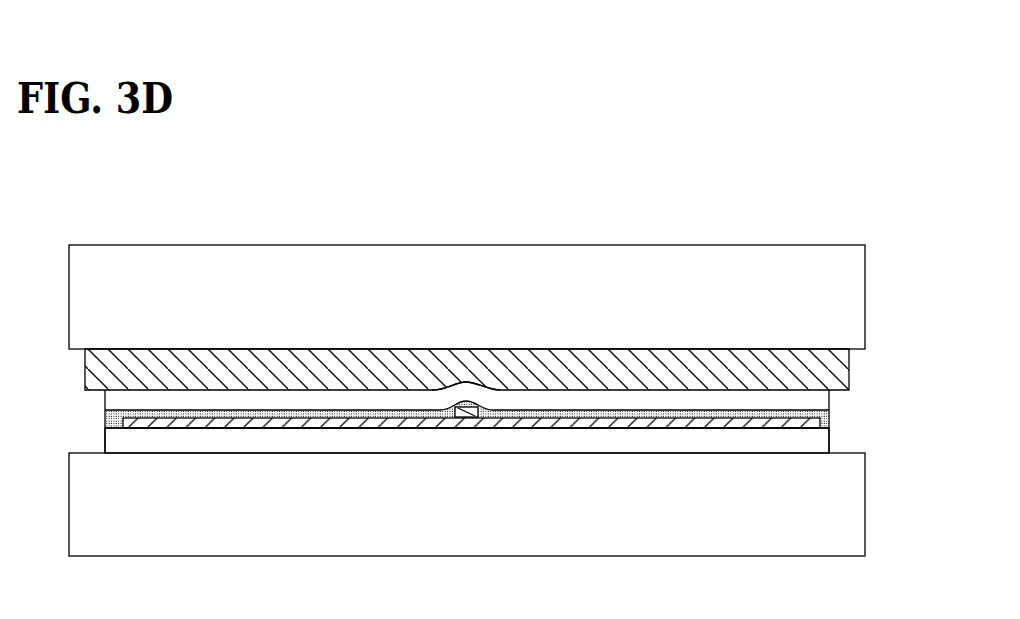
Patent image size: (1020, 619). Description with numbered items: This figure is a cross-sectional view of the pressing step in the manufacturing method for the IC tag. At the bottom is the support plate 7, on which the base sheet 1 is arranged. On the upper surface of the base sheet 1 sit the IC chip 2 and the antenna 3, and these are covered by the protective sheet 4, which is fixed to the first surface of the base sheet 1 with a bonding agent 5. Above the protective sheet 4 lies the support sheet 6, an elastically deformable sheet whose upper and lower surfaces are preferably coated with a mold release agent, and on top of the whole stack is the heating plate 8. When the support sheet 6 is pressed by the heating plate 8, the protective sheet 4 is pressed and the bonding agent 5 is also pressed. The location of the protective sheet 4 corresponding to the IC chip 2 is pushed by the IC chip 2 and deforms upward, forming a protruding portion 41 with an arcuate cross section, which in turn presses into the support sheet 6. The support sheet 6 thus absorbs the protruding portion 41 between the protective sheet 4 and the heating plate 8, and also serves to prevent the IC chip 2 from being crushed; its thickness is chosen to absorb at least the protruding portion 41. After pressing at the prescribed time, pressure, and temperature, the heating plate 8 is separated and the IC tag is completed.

The base sheet 1 is at (810, 448).
The IC chip 2 is at (465, 416).
The antenna 3 is at (578, 423).
The protective sheet 4 is at (818, 401).
The protruding portion 41 is at (465, 391).
The bonding agent 5 is at (106, 413).
The support sheet 6 is at (830, 374).
The support plate 7 is at (850, 528).
The heating plate 8 is at (830, 300).